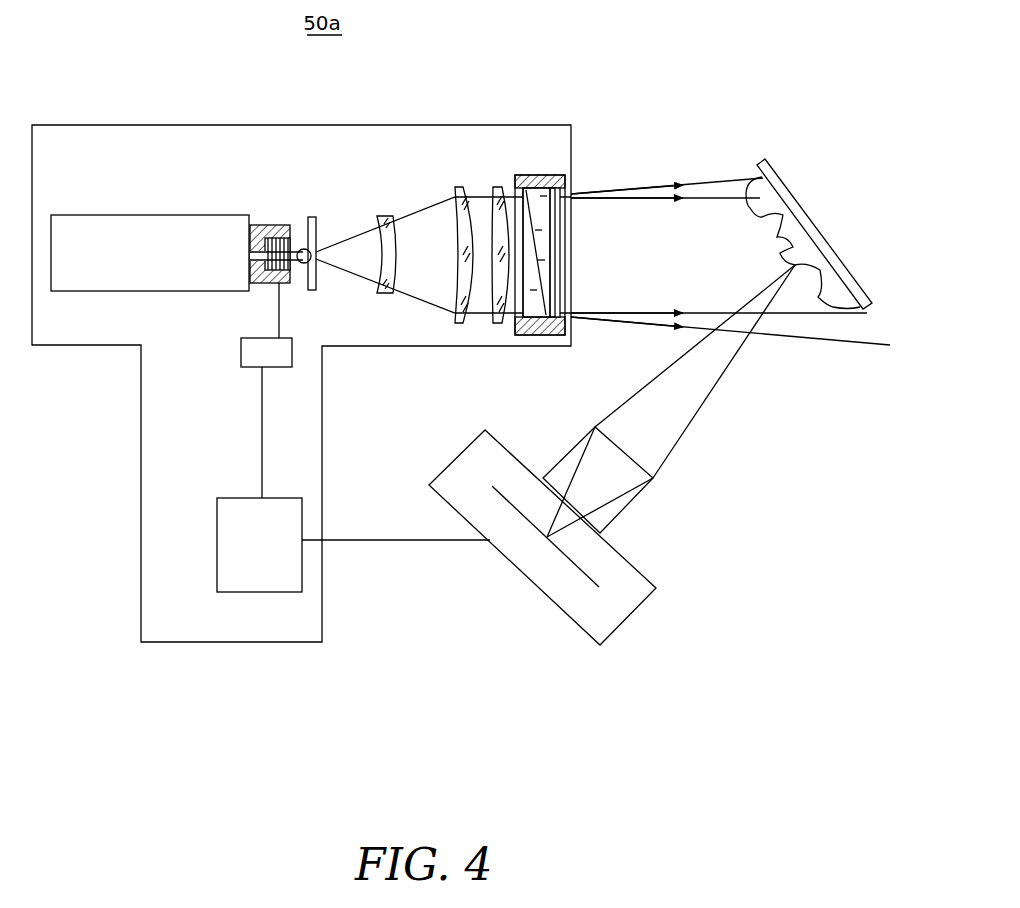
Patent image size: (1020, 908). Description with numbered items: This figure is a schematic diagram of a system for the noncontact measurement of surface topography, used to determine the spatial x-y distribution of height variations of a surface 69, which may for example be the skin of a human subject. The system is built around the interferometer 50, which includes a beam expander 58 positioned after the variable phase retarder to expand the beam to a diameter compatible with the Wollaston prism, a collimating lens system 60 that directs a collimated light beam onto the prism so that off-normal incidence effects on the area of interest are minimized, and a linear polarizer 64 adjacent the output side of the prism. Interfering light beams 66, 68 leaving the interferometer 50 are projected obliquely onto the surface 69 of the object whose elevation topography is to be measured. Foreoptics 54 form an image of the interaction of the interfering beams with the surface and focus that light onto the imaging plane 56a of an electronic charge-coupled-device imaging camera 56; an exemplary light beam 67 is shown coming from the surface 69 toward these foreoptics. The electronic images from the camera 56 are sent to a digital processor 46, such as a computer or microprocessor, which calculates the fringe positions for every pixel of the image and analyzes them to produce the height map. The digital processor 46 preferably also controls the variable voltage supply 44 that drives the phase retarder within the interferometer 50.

The interferometer 50 is at (225, 124).
The variable voltage supply 44 is at (241, 354).
The digital processor 46 is at (217, 535).
The foreoptics 54 is at (573, 448).
The CCD imaging camera 56 is at (457, 452).
The imaging plane 56a is at (592, 580).
The beam expander 58 is at (314, 224).
The collimating lens system 60 is at (502, 175).
The linear polarizer 64 is at (562, 257).
The interfering light beam 66 is at (631, 187).
The light beam 67 is at (728, 380).
The interfering light beam 68 is at (633, 200).
The surface 69 is at (818, 297).